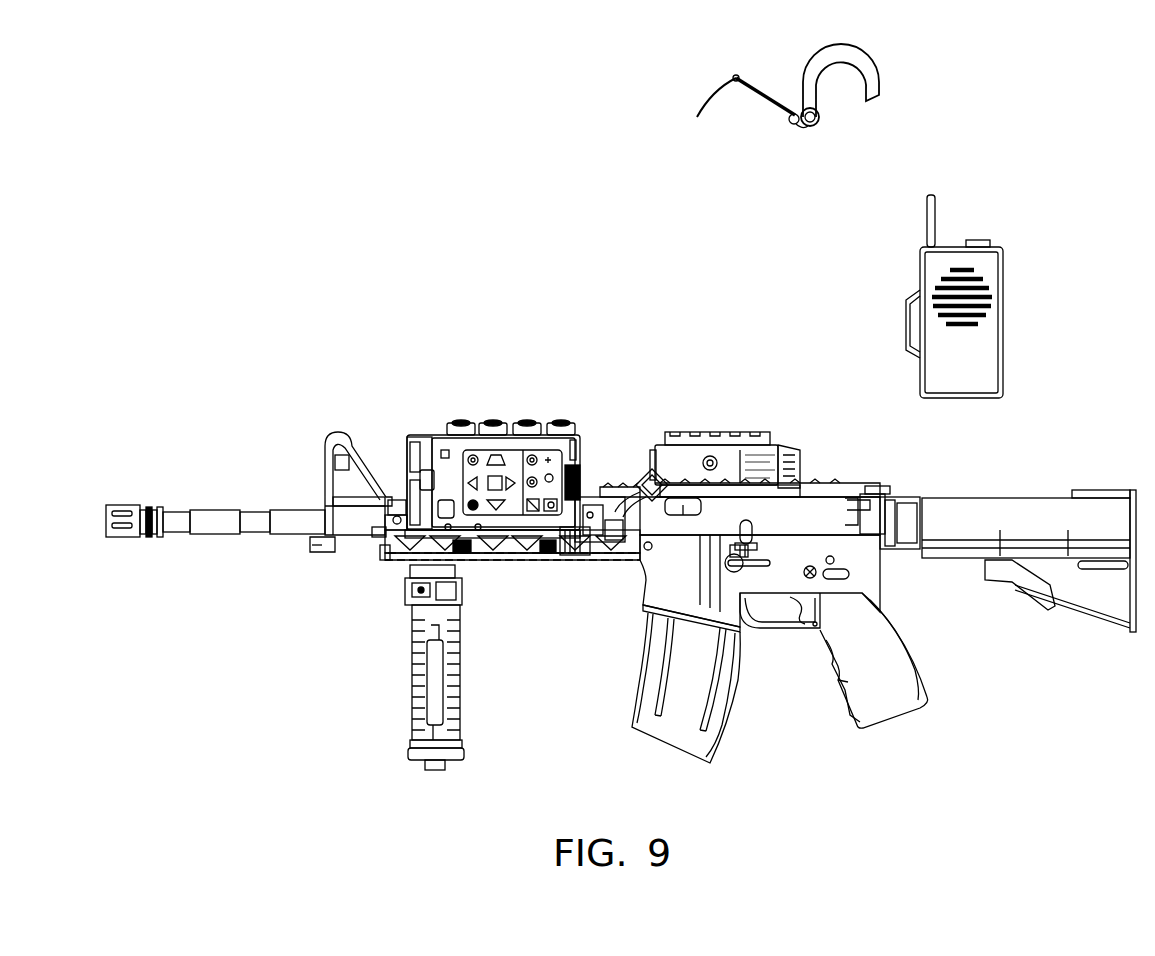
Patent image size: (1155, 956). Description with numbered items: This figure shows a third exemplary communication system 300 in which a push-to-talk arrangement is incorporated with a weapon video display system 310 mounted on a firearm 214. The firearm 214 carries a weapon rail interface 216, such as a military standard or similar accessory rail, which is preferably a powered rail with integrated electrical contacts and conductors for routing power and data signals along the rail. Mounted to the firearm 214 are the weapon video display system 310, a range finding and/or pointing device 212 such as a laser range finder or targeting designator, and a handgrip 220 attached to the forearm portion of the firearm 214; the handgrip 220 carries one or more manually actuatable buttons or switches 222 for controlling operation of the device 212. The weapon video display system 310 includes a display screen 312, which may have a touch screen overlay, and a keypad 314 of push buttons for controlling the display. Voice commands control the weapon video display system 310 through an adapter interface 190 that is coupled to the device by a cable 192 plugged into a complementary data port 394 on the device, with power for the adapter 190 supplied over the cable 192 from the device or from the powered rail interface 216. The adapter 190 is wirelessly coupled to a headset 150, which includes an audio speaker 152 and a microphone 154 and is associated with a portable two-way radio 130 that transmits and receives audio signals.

The third exemplary communication system 300 is at (398, 110).
The weapon video display system 310 is at (416, 426).
The display screen 312 is at (405, 448).
The keypad 314 is at (518, 462).
The adapter interface 190 is at (638, 480).
The cable 192 is at (608, 500).
The data port 394 is at (573, 505).
The range finding and/or pointing device 212 is at (755, 410).
The firearm 214 is at (987, 492).
The weapon rail interface 216 is at (390, 552).
The handgrip 220 is at (406, 704).
The manually actuatable buttons or switches 222 is at (412, 606).
The two-way radio 130 is at (1008, 300).
The headset 150 is at (779, 132).
The audio speaker 152 is at (822, 122).
The microphone 154 is at (732, 115).